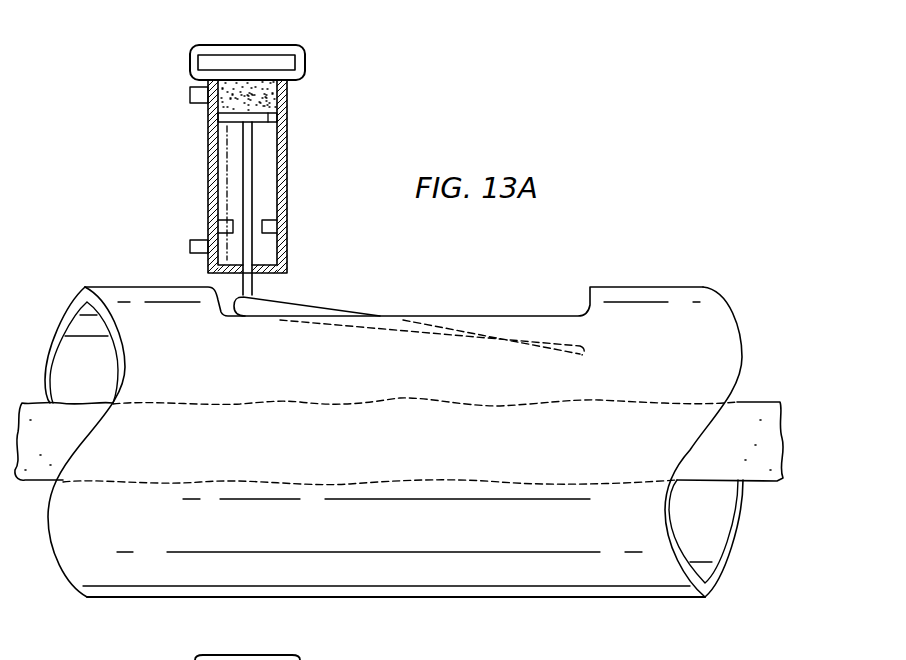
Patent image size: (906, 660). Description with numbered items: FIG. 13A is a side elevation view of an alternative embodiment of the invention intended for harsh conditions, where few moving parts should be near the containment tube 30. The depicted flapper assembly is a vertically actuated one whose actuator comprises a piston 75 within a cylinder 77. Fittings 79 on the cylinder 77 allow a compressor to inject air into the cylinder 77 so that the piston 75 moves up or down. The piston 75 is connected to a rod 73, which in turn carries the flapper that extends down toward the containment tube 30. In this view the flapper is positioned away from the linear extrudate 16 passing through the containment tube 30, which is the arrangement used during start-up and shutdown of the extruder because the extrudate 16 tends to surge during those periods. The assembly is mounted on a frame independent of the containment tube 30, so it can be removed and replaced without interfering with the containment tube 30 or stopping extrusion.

The extrudate 16 is at (752, 402).
The containment tube 30 is at (647, 287).
The rod 73 is at (242, 168).
The piston 75 is at (286, 125).
The cylinder 77 is at (287, 189).
The fittings 79 is at (190, 95).